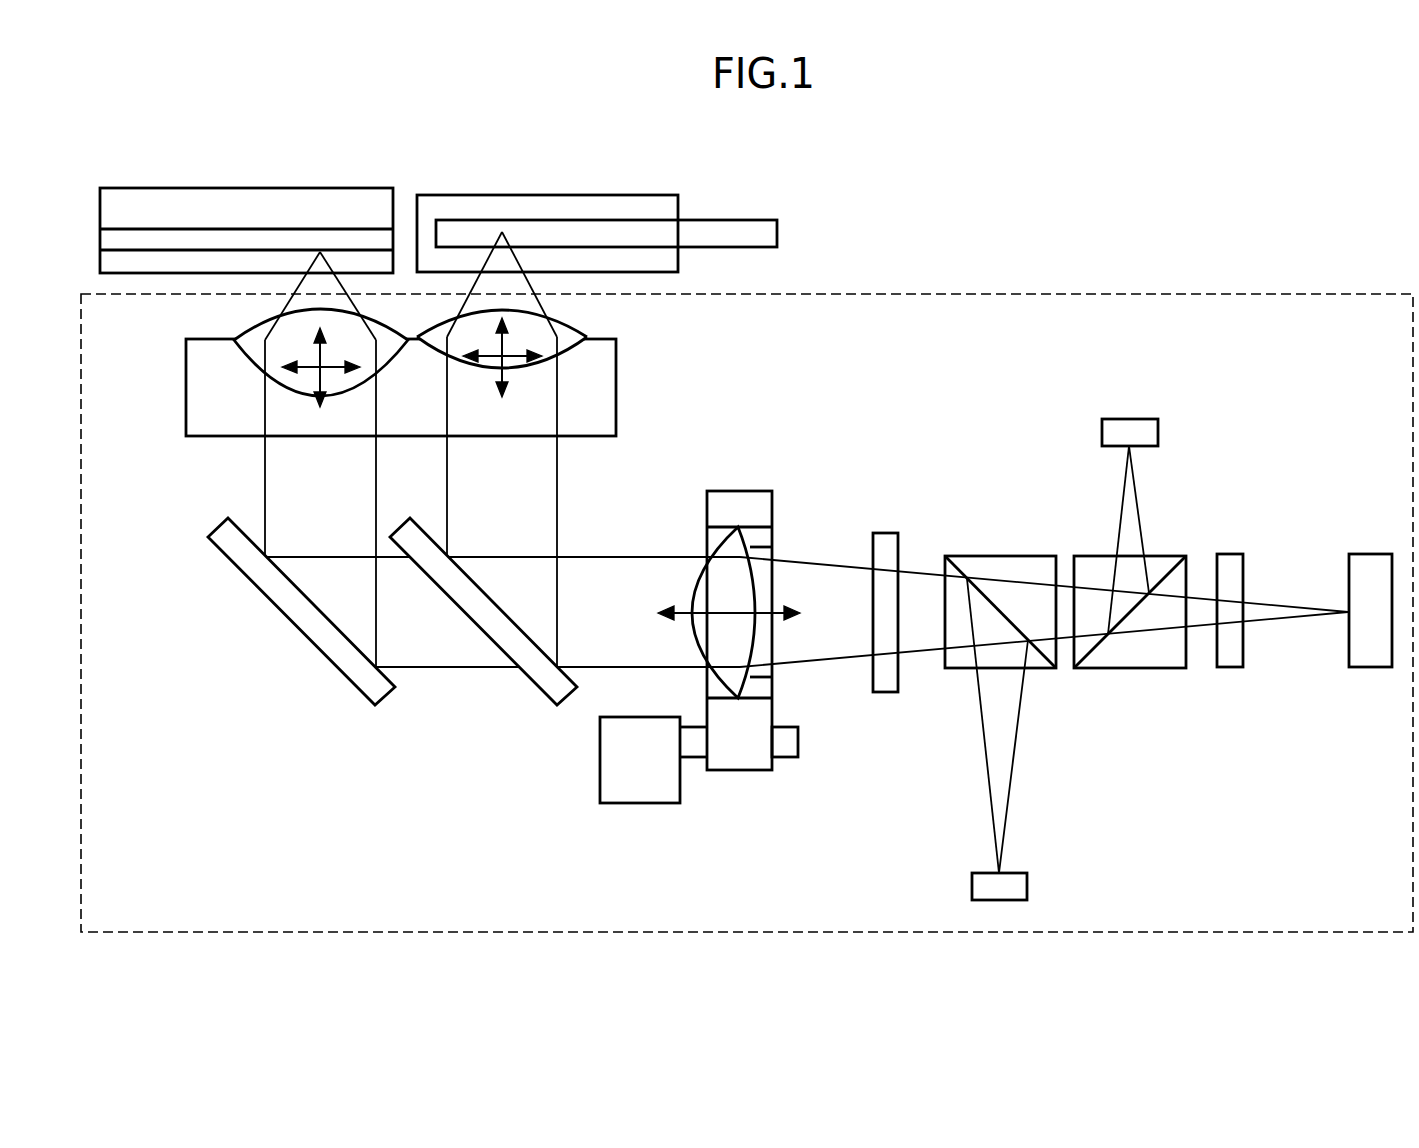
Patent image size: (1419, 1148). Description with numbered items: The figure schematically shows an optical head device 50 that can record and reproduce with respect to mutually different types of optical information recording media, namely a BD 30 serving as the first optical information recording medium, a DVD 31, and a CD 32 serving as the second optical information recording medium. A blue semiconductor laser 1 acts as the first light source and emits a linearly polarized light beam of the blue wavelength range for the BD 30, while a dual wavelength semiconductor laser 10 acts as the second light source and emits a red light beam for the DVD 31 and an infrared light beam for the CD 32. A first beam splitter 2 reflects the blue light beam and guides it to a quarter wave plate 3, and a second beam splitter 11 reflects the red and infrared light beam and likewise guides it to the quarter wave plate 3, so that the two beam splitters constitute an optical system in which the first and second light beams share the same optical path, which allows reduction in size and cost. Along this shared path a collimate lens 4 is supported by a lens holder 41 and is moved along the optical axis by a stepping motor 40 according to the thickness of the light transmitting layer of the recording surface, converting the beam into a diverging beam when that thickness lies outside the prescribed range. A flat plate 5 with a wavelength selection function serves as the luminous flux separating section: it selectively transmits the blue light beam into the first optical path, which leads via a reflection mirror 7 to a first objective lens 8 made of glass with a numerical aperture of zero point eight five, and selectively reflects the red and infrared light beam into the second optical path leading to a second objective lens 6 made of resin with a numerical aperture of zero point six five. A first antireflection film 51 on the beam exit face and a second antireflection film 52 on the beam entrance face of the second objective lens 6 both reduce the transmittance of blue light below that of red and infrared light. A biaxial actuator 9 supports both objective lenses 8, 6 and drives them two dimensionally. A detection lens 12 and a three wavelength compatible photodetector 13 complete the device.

The blue semiconductor laser 1 is at (1028, 885).
The first beam splitter 2 is at (1002, 555).
The quarter wave plate 3 is at (887, 532).
The collimate lens 4 is at (750, 531).
The flat plate with a wavelength selection function 5 is at (533, 684).
The second objective lens 6 is at (549, 449).
The reflection mirror 7 is at (348, 684).
The first objective lens 8 is at (243, 321).
The biaxial actuator 9 is at (617, 380).
The dual wavelength semiconductor laser 10 is at (1136, 417).
The second beam splitter 11 is at (1138, 670).
The detection lens 12 is at (1237, 670).
The three wavelength compatible photodetector 13 is at (1367, 670).
The BD 30 is at (160, 187).
The DVD 31 is at (745, 219).
The CD 32 is at (513, 193).
The stepping motor 40 is at (645, 805).
The lens holder 41 is at (760, 772).
The optical head device 50 is at (1090, 292).
The first antireflection film 51 is at (565, 307).
The second antireflection film 52 is at (568, 350).